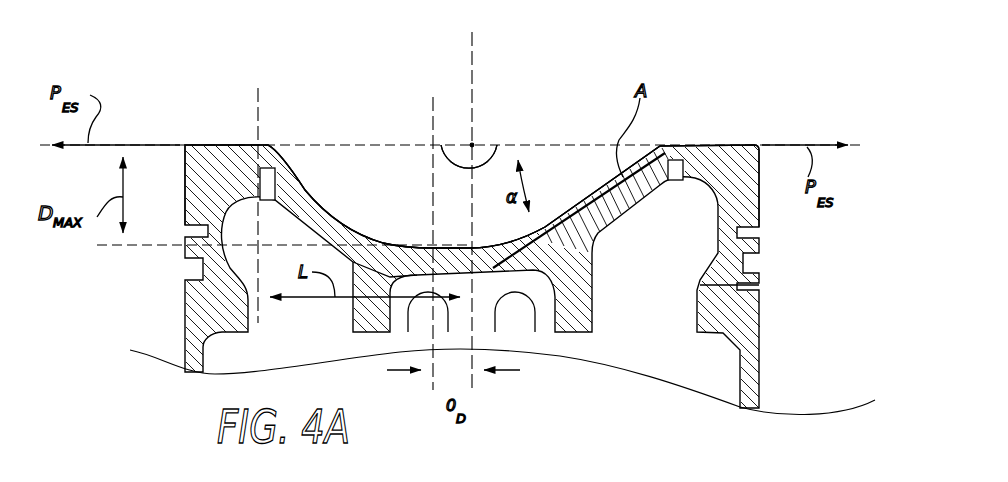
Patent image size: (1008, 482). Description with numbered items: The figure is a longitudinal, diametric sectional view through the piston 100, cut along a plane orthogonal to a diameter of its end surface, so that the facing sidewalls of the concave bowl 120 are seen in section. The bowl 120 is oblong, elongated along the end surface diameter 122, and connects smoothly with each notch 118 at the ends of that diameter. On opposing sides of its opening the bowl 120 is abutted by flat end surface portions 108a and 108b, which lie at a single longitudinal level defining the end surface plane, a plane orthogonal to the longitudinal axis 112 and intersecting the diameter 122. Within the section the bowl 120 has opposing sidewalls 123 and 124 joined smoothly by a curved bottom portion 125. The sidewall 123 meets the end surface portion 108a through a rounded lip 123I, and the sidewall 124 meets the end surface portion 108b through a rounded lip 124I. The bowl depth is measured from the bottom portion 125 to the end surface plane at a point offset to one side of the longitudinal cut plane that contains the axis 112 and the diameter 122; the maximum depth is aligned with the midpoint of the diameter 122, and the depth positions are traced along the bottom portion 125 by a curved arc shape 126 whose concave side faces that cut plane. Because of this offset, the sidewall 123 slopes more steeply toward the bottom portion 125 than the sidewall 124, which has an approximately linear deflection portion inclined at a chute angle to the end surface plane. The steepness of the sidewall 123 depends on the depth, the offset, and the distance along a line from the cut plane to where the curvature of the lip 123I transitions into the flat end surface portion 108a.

The piston 100 is at (772, 318).
The flat end surface portion 108a is at (208, 145).
The flat end surface portion 108b is at (722, 145).
The longitudinal axis 112 is at (472, 52).
The notch 118 is at (450, 100).
The concave bowl 120 is at (375, 112).
The diameter 122 is at (472, 145).
The sidewall 123 is at (309, 232).
The rounded lip 123I is at (275, 145).
The sidewall 124 is at (600, 185).
The rounded lip 124I is at (662, 145).
The curved bottom portion 125 is at (498, 240).
The curved arc shape 126 is at (433, 246).